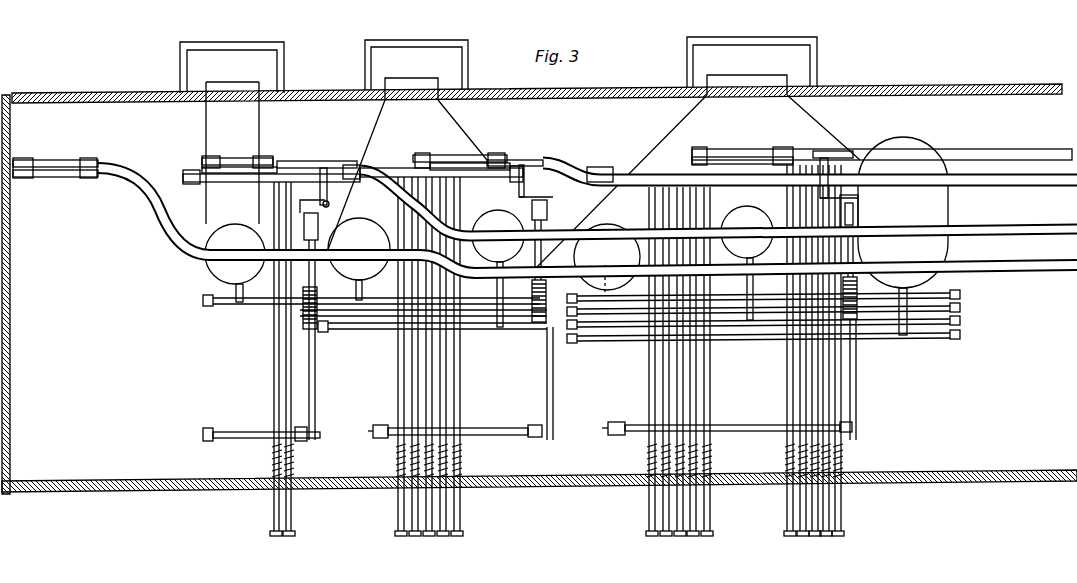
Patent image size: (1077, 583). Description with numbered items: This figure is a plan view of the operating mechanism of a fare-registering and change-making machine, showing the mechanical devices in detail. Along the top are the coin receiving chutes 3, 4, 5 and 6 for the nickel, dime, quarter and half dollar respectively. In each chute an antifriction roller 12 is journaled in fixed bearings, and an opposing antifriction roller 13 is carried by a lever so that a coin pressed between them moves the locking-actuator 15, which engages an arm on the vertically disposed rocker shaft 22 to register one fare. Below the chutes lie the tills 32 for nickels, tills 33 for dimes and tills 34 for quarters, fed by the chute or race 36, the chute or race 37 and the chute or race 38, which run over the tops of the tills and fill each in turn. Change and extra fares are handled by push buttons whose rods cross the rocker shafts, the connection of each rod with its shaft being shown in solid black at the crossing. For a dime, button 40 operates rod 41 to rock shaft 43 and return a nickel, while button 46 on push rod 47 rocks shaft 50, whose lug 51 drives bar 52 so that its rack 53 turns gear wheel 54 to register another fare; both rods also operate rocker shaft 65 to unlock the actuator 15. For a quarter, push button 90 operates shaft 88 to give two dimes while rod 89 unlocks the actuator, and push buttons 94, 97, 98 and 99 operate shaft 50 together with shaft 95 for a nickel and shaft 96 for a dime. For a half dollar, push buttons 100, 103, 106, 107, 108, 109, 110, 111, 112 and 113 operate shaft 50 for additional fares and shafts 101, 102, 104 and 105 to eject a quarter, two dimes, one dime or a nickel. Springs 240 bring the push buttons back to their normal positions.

The coin receiving chute 3 is at (60, 160).
The coin receiving chute 4 is at (230, 160).
The coin receiving chute 5 is at (473, 157).
The coin receiving chute 6 is at (693, 157).
The antifriction roller 12 is at (213, 167).
The antifriction roller 13 is at (90, 160).
The locking-actuator 15 is at (293, 163).
The rocker shaft 22 is at (345, 208).
The till 32 is at (297, 251).
The till 33 is at (622, 234).
The till 34 is at (903, 236).
The chute or race 36 is at (160, 218).
The chute or race 37 is at (1042, 234).
The chute or race 38 is at (1043, 188).
The button 40 is at (276, 537).
The rod 41 is at (275, 513).
The rocker shaft 43 is at (213, 305).
The button 46 is at (290, 536).
The push rod 47 is at (292, 513).
The rocker shaft 50 is at (233, 438).
The lug 51 is at (315, 441).
The bar 52 is at (317, 372).
The rack 53 is at (320, 333).
The gear wheel 54 is at (302, 327).
The rocker shaft 65 is at (213, 183).
The shaft 88 is at (482, 327).
The rod 89 is at (401, 498).
The push button 90 is at (402, 536).
The push button 94 is at (416, 536).
The shaft 95 is at (373, 317).
The shaft 96 is at (354, 288).
The push button 97 is at (432, 536).
The push button 98 is at (447, 536).
The push button 99 is at (463, 533).
The push button 100 is at (651, 532).
The shaft 101 is at (577, 343).
The shaft 102 is at (600, 316).
The push button 103 is at (667, 534).
The shaft 104 is at (637, 329).
The shaft 105 is at (722, 296).
The push button 106 is at (680, 534).
The push button 107 is at (695, 535).
The push button 108 is at (710, 535).
The push button 109 is at (789, 532).
The push button 110 is at (802, 535).
The push button 111 is at (814, 535).
The push button 112 is at (827, 535).
The push button 113 is at (838, 535).
The springs 240 is at (463, 463).